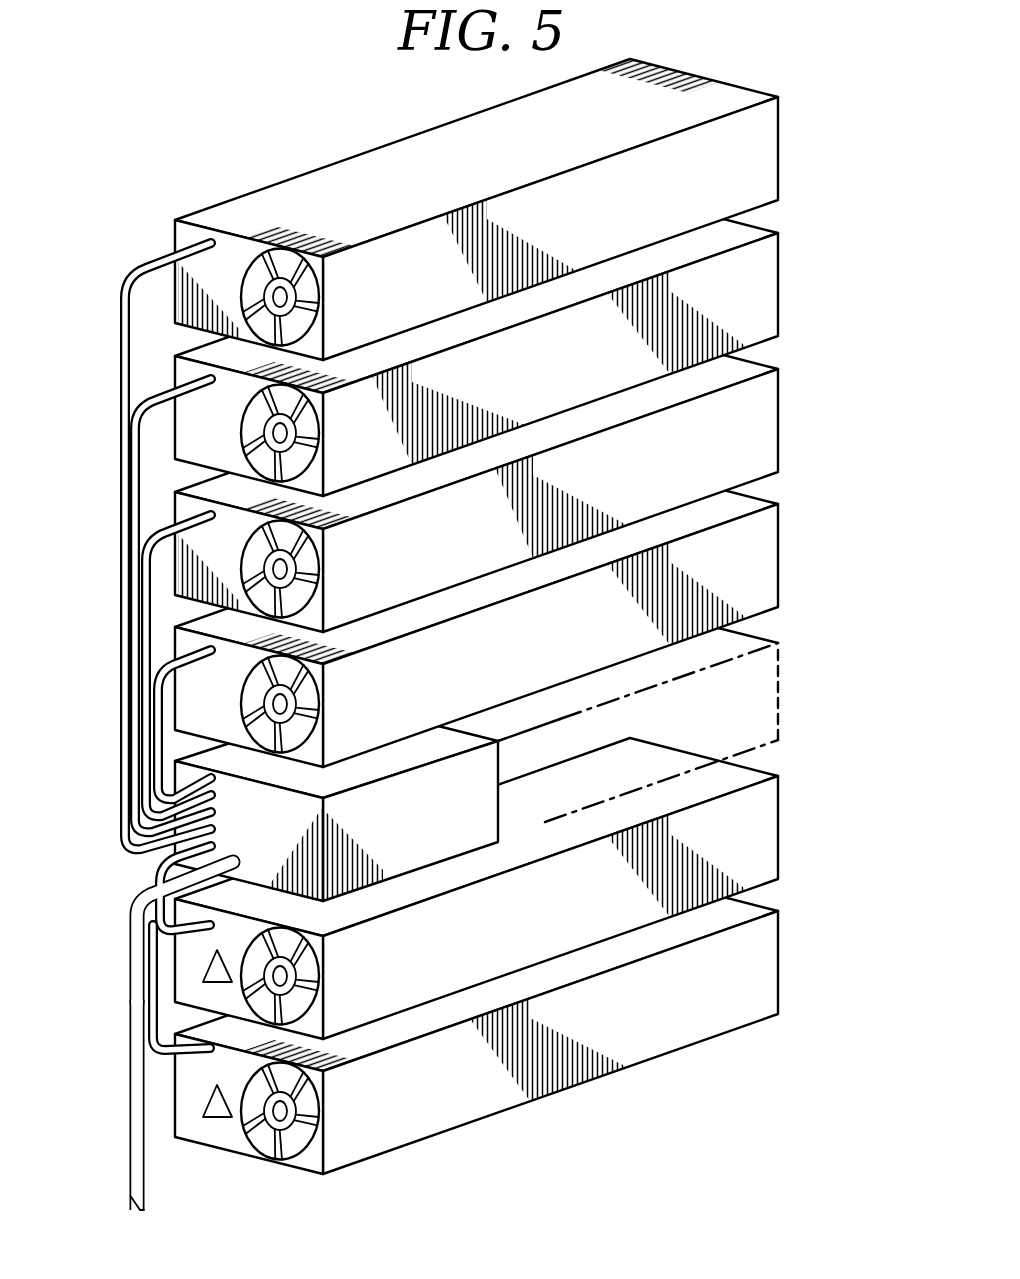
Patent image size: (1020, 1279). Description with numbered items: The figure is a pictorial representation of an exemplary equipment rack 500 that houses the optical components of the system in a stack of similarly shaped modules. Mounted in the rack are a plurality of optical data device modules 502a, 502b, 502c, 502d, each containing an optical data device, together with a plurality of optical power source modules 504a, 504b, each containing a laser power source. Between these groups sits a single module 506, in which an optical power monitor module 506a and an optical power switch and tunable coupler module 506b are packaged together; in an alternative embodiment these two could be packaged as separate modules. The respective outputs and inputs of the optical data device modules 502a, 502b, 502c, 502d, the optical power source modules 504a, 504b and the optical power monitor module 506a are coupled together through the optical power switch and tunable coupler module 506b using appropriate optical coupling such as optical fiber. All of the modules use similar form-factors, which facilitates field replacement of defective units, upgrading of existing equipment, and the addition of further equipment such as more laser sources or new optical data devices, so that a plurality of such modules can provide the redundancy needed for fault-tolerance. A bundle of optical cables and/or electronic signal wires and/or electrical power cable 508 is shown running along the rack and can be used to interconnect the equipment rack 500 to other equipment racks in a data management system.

The equipment rack 500 is at (310, 98).
The optical data device module 502a is at (760, 156).
The optical data device module 502b is at (760, 290).
The optical data device module 502c is at (760, 425).
The optical data device module 502d is at (760, 558).
The optical power source module 504a is at (760, 843).
The optical power source module 504b is at (760, 976).
The single module 506 is at (540, 785).
The optical power monitor module 506a is at (412, 852).
The optical power switch and tunable coupler module 506b is at (778, 733).
The bundle of optical cables and/or electronic signal wires and/or electrical power 508 is at (130, 1122).